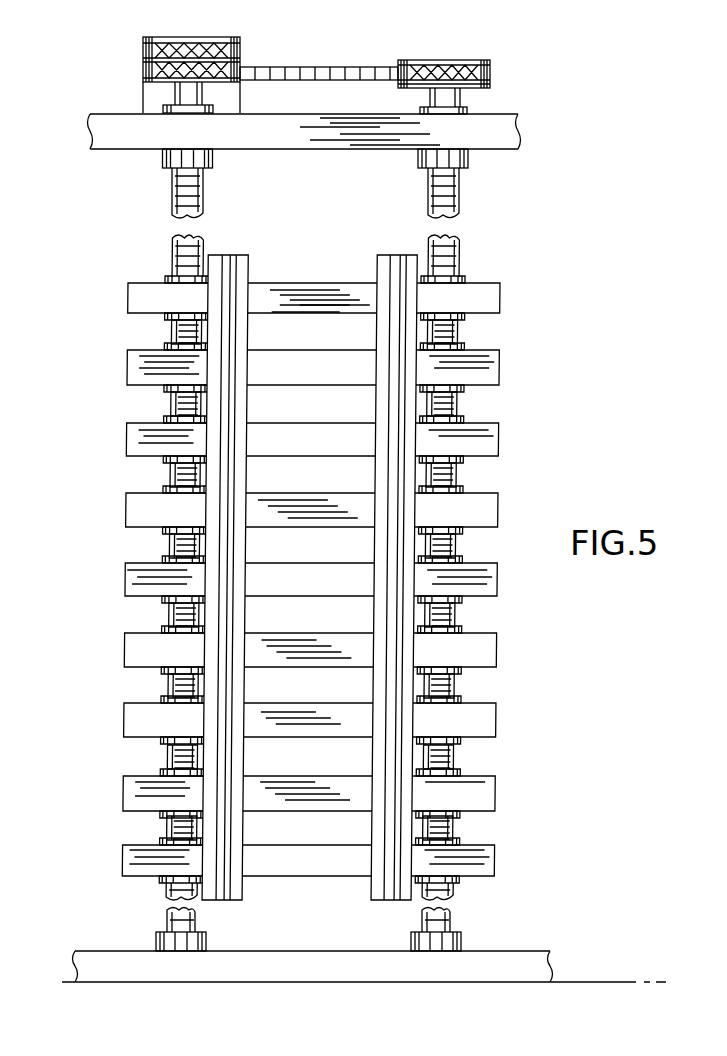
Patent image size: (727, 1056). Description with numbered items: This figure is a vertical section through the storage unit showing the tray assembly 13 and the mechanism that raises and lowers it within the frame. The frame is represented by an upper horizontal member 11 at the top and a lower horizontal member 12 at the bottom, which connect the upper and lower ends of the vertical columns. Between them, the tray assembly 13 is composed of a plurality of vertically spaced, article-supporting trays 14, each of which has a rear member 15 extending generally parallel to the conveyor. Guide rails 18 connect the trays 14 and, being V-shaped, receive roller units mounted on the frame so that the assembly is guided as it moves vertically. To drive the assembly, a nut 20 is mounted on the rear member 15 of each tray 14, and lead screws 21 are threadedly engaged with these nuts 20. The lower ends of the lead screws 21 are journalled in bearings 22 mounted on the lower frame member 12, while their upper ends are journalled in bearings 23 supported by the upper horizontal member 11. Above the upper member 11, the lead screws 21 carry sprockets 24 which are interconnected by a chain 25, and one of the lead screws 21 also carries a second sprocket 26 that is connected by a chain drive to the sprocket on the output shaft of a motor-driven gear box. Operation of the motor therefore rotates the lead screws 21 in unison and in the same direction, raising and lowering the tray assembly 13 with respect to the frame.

The horizontal members 11 is at (520, 131).
The horizontal members 12 is at (531, 961).
The tray assembly 13 is at (323, 564).
The trays 14 is at (330, 300).
The rear member 15 is at (140, 297).
The guide rails 18 is at (243, 262).
The nuts 20 is at (462, 281).
The lead screws 21 is at (180, 195).
The bearings 22 is at (155, 935).
The bearings 23 is at (215, 108).
The sprockets 24 is at (143, 78).
The chain 25 is at (348, 66).
The second sprocket 26 is at (165, 40).